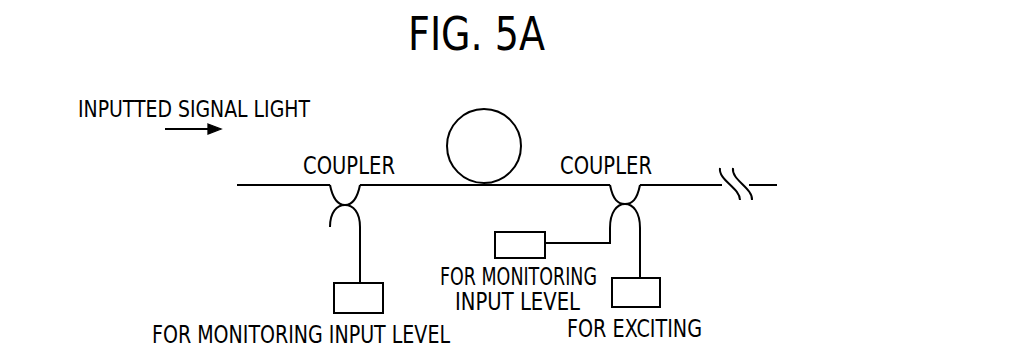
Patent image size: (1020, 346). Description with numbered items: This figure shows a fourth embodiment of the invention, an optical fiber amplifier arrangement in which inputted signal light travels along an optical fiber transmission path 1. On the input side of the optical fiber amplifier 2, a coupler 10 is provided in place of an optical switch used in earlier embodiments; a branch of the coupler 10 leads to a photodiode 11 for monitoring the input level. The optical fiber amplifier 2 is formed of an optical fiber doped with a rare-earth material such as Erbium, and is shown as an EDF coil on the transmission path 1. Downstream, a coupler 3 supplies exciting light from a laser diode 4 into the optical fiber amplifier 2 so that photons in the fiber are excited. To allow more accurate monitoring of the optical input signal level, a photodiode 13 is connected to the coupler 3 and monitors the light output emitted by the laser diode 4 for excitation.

The optical fiber transmission path 1 is at (433, 188).
The optical fiber amplifier 2 is at (519, 131).
The coupler 3 is at (640, 191).
The laser diode 4 is at (660, 291).
The coupler 10 is at (330, 197).
The photodiode for monitoring input level 11 is at (383, 296).
The photodiode 13 is at (495, 235).